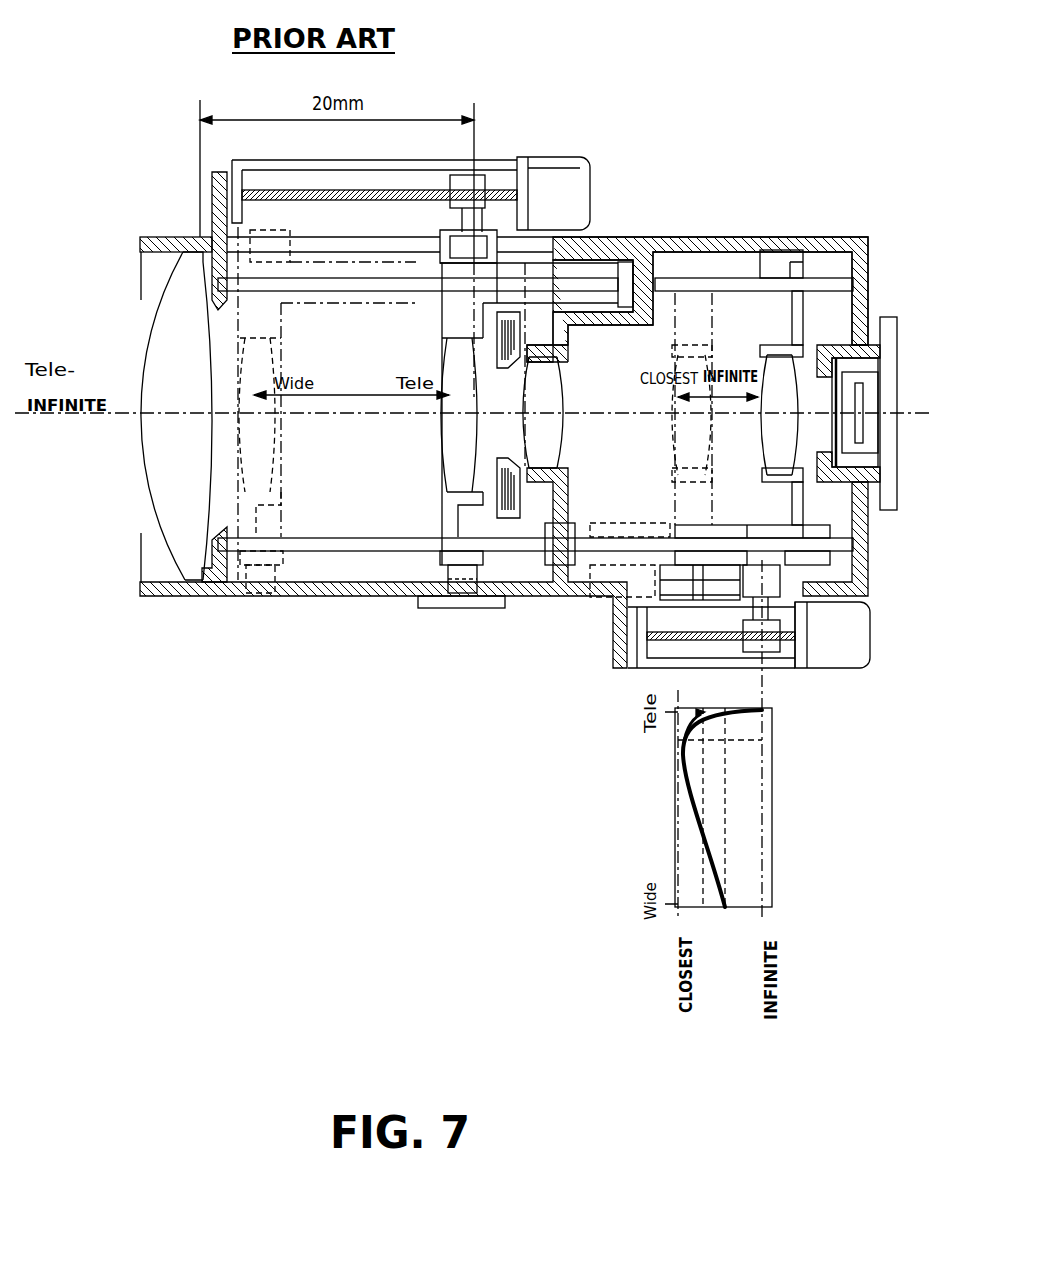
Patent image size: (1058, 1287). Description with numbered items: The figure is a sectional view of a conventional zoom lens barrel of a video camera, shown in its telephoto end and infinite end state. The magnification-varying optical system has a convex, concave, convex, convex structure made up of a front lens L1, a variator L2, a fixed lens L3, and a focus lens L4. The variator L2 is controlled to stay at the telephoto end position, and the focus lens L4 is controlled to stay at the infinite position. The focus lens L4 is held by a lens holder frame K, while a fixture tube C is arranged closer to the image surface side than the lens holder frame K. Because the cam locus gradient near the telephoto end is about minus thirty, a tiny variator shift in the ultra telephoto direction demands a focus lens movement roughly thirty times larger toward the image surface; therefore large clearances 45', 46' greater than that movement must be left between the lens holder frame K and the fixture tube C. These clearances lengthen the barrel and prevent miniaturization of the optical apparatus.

The front lens L1 is at (188, 572).
The variator L2 is at (458, 468).
The fixed lens L3 is at (550, 448).
The focus lens L4 is at (776, 440).
The fixture tube C is at (867, 258).
The lens holder frame K is at (795, 584).
The clearance 45' is at (861, 421).
The clearance 46' is at (853, 577).